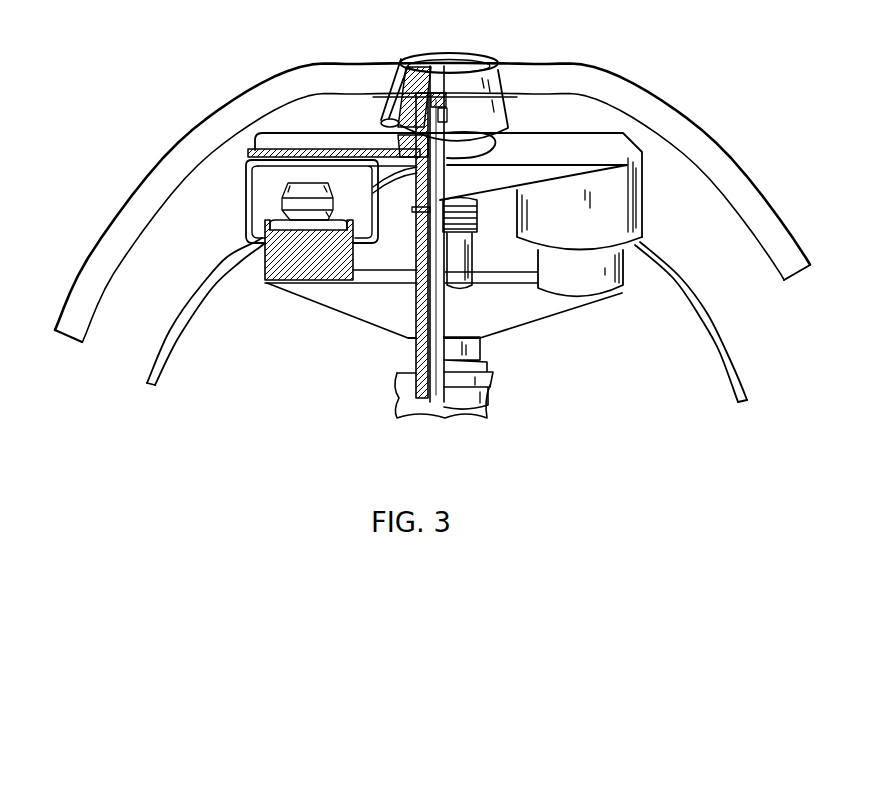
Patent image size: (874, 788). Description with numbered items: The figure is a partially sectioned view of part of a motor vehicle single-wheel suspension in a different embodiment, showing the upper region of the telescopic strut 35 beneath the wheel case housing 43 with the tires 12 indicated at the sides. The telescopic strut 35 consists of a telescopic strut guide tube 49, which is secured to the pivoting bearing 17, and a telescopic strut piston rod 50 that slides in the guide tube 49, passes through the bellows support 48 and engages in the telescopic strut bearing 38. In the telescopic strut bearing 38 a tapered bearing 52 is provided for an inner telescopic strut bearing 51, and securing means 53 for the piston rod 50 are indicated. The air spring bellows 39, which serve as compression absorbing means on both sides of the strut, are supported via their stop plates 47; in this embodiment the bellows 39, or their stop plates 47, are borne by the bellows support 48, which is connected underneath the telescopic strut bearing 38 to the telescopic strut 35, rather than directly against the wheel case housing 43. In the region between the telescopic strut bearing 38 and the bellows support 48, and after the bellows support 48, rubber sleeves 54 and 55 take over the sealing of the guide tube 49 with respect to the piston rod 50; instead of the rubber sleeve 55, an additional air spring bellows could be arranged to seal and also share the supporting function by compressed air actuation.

The tires 12 is at (710, 327).
The pivoting bearing 17 is at (490, 400).
The telescopic strut 35 is at (473, 253).
The telescopic strut bearing 38 is at (480, 54).
The air spring bellows 39 is at (243, 207).
The wheel case housing 43 is at (677, 122).
The stop plate 47 is at (253, 152).
The bellows support 48 is at (578, 128).
The telescopic strut guide tube 49 is at (410, 320).
The telescopic strut piston rod 50 is at (437, 310).
The inner telescopic strut bearing 51 is at (408, 90).
The tapered bearing 52 is at (442, 53).
The securing means 53 is at (457, 97).
The rubber sleeve 54 is at (490, 143).
The rubber sleeve 55 is at (473, 208).